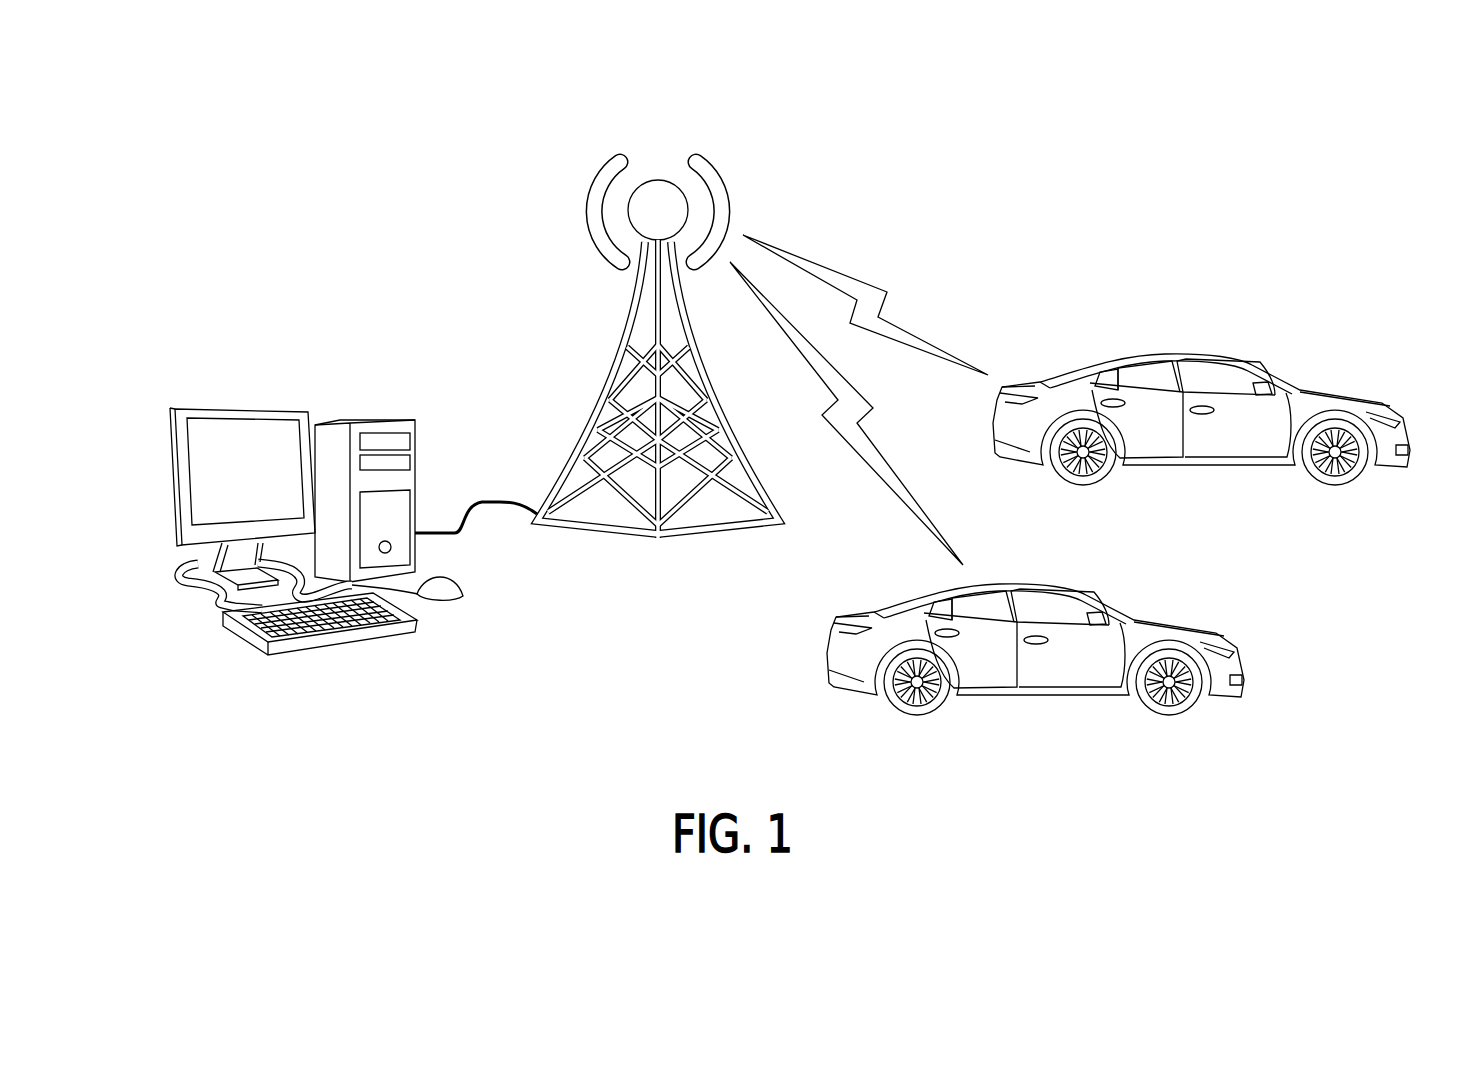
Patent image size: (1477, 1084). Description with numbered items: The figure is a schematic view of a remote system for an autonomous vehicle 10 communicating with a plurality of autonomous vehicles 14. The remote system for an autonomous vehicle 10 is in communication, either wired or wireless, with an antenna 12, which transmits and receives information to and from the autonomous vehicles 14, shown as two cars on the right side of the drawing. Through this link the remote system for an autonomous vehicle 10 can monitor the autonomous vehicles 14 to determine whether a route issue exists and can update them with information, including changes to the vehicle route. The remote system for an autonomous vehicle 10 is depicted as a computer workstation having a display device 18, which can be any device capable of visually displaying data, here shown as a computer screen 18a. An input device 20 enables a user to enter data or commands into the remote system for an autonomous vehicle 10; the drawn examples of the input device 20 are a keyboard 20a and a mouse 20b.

The remote system for an autonomous vehicle 10 is at (348, 389).
The antenna 12 is at (633, 321).
The autonomous vehicles 14 is at (1387, 553).
The display device 18 is at (232, 408).
The computer screen 18a is at (215, 479).
The input device 20 is at (437, 620).
The keyboard 20a is at (352, 641).
The mouse 20b is at (463, 597).